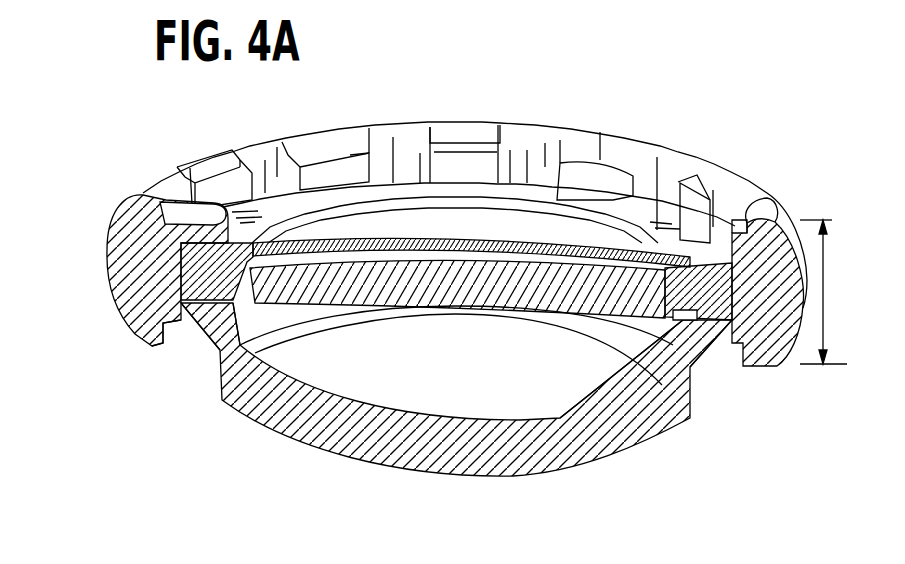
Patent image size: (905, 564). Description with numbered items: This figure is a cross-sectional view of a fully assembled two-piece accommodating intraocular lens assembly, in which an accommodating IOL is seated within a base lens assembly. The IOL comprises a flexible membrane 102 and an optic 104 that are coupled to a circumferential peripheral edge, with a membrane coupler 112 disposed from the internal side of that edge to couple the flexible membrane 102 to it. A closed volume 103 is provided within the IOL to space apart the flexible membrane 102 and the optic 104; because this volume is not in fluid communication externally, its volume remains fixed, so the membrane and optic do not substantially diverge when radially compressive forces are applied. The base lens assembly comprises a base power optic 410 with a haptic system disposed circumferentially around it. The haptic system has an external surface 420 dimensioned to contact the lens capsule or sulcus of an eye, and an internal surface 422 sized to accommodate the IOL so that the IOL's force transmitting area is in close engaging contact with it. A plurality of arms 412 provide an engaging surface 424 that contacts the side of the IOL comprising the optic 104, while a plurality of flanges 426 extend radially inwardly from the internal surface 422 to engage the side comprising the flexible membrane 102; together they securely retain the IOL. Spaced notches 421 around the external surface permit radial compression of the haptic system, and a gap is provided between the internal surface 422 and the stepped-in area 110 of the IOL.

The flexible membrane 102 is at (458, 227).
The closed volume 103 is at (493, 257).
The optic 104 is at (495, 312).
The stepped-in area 110 is at (177, 292).
The membrane coupler 112 is at (657, 227).
The base power optic 410 is at (513, 476).
The arms 412 is at (195, 315).
The external surface 420 is at (840, 292).
The notches 421 is at (760, 195).
The internal surface 422 is at (177, 258).
The engaging surface 424 is at (170, 343).
The flanges 426 is at (190, 210).